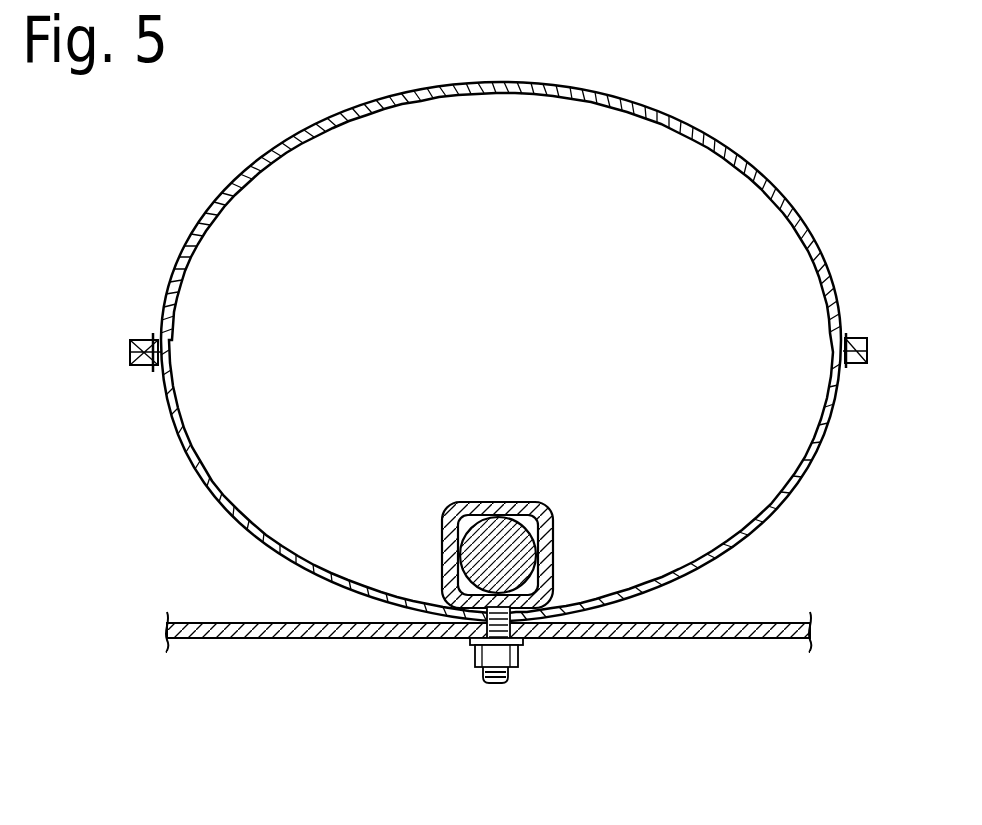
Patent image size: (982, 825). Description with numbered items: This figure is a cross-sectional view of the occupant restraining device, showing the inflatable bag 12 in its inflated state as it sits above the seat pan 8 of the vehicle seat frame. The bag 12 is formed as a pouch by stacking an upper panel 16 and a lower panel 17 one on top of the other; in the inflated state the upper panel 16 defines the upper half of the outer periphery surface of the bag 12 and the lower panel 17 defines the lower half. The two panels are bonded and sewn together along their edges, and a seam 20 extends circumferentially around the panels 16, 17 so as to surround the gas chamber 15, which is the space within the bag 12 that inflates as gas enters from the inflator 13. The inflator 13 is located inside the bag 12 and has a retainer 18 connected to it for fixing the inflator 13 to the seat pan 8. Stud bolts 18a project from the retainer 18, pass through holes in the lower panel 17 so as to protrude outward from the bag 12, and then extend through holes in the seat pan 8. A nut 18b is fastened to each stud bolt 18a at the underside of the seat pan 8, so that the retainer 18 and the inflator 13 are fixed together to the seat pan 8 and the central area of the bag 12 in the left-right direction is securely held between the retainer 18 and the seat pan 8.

The bag 12 is at (528, 312).
The upper panel 16 is at (730, 150).
The lower panel 17 is at (785, 487).
The gas chamber 15 is at (426, 340).
The seam 20 is at (156, 340).
The seat pan 8 is at (768, 640).
The retainer 18 is at (543, 505).
The inflator 13 is at (445, 514).
The stud bolt 18a is at (497, 684).
The nut 18b is at (525, 660).